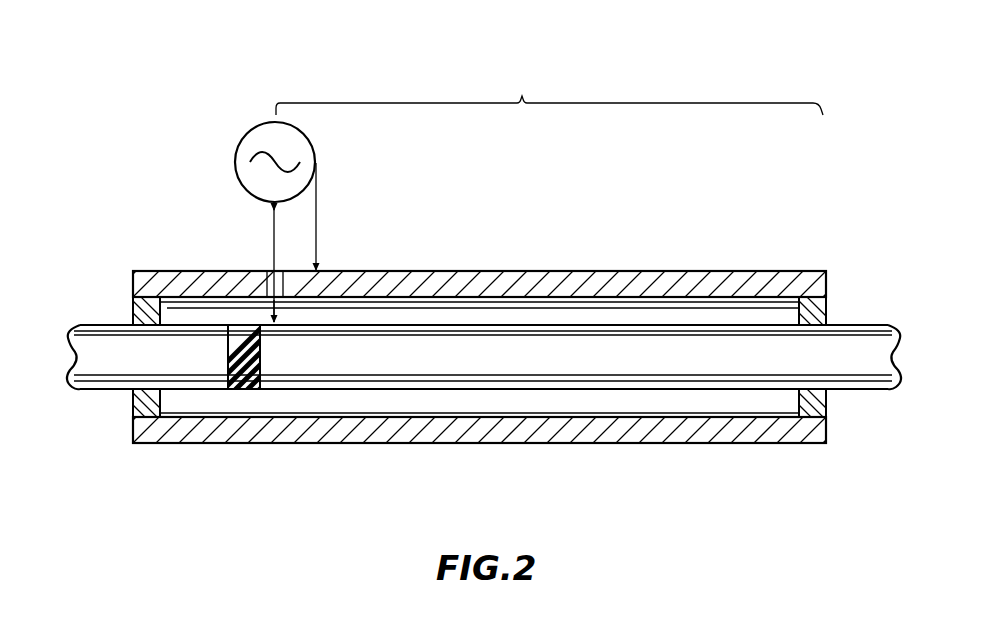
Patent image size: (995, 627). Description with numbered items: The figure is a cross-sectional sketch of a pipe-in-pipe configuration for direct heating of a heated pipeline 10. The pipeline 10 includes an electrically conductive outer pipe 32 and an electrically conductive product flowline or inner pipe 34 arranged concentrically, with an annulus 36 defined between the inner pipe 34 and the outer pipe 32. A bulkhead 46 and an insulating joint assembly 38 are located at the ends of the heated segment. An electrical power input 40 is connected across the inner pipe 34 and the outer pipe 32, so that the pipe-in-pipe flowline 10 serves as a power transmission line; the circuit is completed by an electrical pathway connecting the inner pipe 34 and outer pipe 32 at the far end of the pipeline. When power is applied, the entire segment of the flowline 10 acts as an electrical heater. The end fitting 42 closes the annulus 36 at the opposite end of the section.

The heated pipeline 10 is at (522, 96).
The outer pipe 32 is at (529, 284).
The inner pipe 34 is at (639, 318).
The annulus 36 is at (376, 397).
The insulating joint assembly 38 is at (236, 323).
The electrical power input 40 is at (323, 156).
The left end cap 42 is at (133, 427).
The bulkhead 46 is at (827, 306).